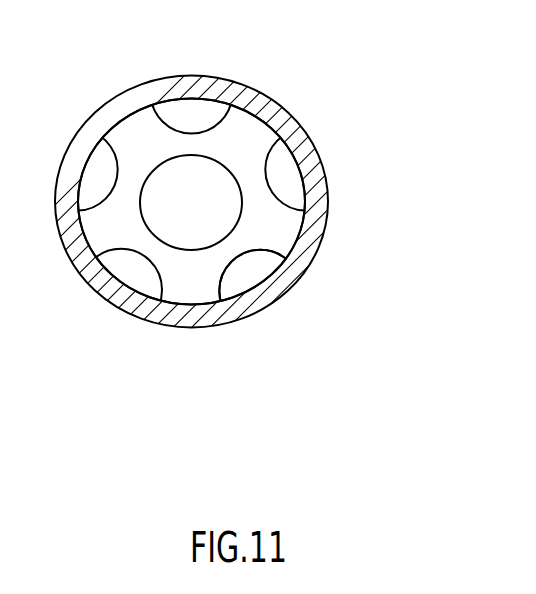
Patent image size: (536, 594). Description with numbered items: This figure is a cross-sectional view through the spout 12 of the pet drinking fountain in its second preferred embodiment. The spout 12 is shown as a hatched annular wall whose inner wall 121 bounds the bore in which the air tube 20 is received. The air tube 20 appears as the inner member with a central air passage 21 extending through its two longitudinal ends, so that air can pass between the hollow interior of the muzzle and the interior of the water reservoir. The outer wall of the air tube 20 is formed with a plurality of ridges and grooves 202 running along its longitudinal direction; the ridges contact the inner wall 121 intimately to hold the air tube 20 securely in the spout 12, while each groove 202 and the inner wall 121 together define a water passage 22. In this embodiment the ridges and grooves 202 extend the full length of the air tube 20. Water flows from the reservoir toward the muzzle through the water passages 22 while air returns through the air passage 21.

The spout 12 is at (303, 120).
The inner wall 121 is at (303, 270).
The air tube 20 is at (290, 228).
The grooves 202 is at (233, 292).
The air passage 21 is at (183, 177).
The water passage 22 is at (250, 275).